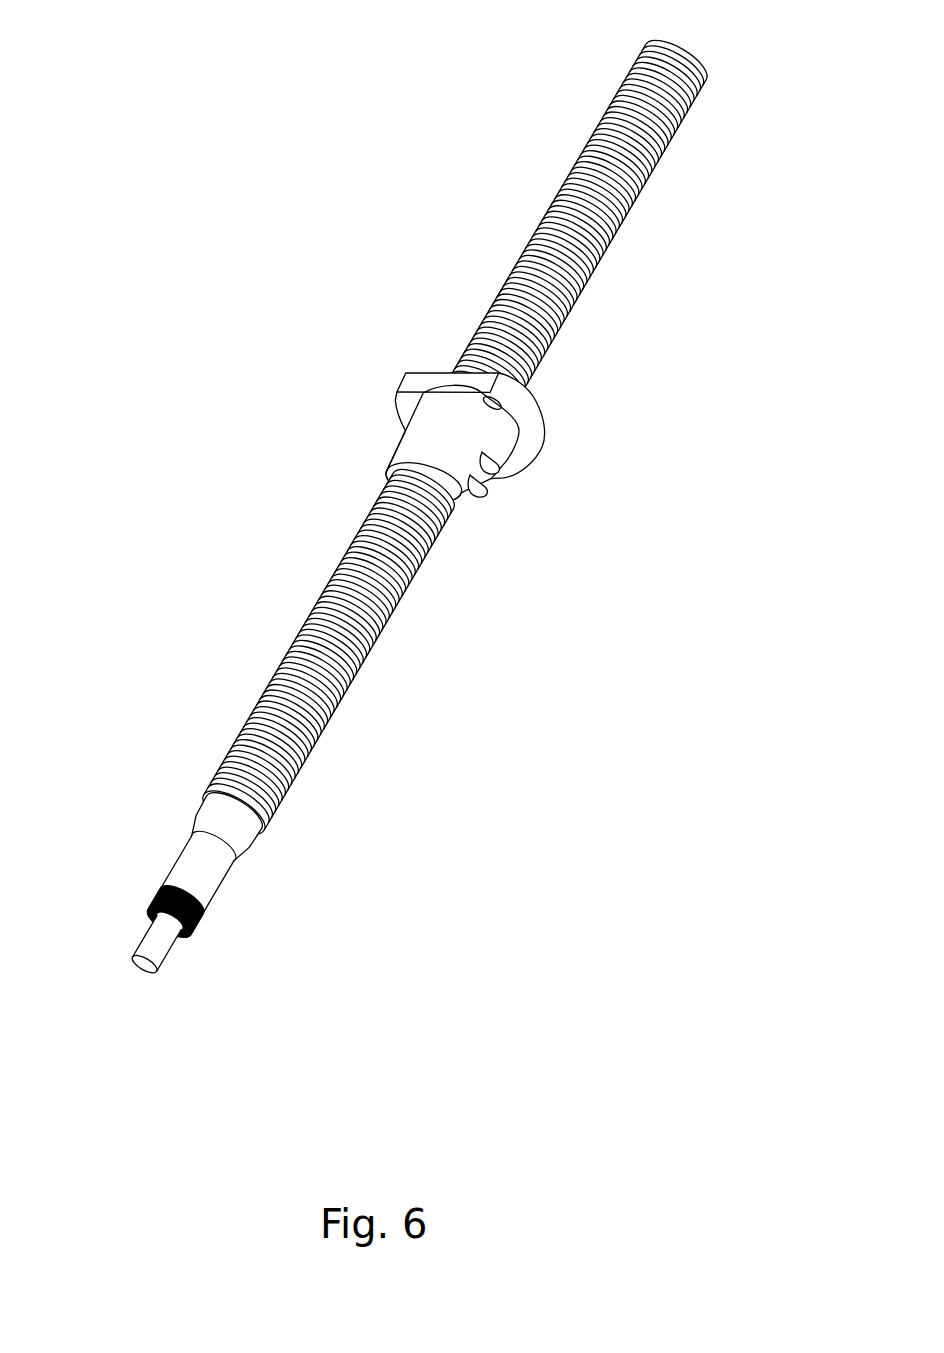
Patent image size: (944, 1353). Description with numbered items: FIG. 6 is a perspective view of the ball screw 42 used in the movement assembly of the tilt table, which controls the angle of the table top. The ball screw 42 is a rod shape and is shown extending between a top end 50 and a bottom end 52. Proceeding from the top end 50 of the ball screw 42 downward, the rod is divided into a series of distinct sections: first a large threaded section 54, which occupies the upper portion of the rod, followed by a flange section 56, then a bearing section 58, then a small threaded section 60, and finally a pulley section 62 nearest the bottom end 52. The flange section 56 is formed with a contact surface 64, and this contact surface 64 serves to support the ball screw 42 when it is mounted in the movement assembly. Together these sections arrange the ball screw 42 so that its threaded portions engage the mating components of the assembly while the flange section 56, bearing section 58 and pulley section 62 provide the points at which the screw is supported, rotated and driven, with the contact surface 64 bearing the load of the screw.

The ball screw 42 is at (430, 545).
The top end 50 is at (505, 437).
The bottom end 52 is at (143, 963).
The large threaded section 54 is at (608, 248).
The flange section 56 is at (237, 838).
The bearing section 58 is at (217, 867).
The small threaded section 60 is at (165, 888).
The pulley section 62 is at (162, 942).
The contact surface 64 is at (233, 858).